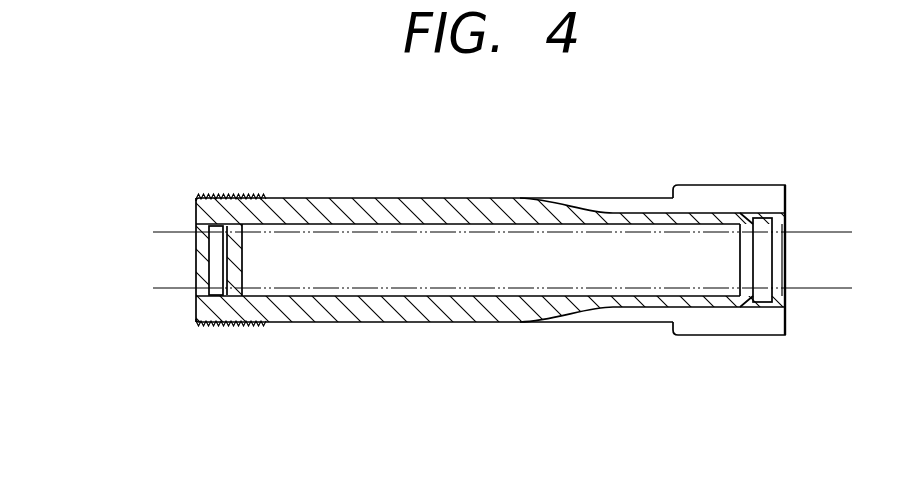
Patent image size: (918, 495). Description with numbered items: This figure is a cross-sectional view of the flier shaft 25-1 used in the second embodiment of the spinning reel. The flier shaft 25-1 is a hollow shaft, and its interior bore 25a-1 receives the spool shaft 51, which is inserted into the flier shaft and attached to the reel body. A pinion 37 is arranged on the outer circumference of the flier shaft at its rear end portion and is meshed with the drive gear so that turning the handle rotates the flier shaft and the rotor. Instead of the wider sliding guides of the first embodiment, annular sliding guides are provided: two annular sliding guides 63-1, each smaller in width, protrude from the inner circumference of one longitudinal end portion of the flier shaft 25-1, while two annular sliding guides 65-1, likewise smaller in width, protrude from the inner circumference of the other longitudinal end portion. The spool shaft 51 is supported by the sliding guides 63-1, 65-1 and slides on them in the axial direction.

The flier shaft 25-1 is at (376, 192).
The inner bore of sleeve body 25a-1 is at (366, 296).
The pinion 37 is at (745, 188).
The spool shaft 51 is at (553, 247).
The annular sliding guide 63-1 is at (232, 288).
The annular sliding guide 65-1 is at (778, 288).